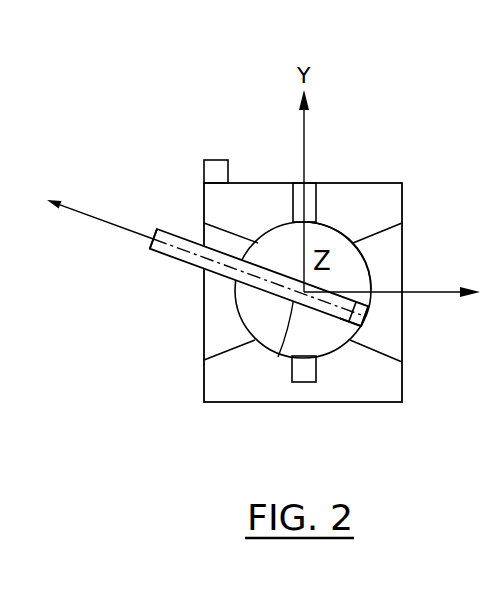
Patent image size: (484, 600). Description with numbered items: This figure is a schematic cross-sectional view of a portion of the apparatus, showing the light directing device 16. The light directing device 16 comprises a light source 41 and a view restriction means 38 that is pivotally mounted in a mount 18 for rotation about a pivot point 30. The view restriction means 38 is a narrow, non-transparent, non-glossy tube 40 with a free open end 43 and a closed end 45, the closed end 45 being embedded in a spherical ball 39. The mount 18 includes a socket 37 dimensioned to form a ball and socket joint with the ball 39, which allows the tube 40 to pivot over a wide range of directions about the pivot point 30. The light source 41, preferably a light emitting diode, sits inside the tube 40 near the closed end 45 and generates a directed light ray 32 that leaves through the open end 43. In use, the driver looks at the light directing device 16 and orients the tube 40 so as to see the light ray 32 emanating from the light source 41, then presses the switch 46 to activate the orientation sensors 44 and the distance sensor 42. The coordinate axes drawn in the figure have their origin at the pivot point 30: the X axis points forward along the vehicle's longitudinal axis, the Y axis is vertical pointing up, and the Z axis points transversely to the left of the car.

The light directing device 16 is at (402, 156).
The mount 18 is at (402, 385).
The pivot point 30 is at (278, 350).
The directed light ray 32 is at (98, 219).
The socket 37 is at (349, 234).
The view restriction means 38 is at (290, 308).
The spherical ball 39 is at (372, 278).
The tube 40 is at (290, 300).
The light source 41 is at (414, 319).
The distance sensor 42 is at (358, 312).
The free open end 43 is at (150, 246).
The orientation sensors 44 is at (308, 207).
The closed end 45 is at (362, 328).
The switch 46 is at (207, 160).